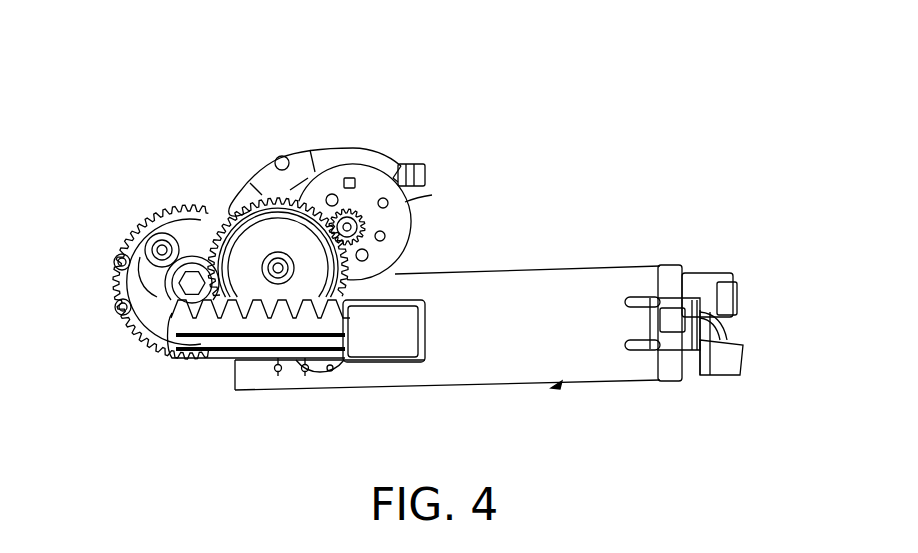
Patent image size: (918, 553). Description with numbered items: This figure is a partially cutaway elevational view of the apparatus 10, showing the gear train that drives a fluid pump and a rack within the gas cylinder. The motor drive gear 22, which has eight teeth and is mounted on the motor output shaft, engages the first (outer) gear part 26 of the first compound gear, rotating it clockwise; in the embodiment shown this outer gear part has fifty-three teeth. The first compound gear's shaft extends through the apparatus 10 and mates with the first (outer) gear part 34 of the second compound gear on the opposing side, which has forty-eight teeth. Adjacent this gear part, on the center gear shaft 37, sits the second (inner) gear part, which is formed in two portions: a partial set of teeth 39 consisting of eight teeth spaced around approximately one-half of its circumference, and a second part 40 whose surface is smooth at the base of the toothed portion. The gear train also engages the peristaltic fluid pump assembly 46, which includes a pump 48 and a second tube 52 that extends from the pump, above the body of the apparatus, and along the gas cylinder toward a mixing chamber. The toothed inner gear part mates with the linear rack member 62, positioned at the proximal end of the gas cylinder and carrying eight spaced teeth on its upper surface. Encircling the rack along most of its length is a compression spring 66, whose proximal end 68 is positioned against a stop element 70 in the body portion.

The apparatus 10 is at (612, 105).
The motor drive gear 22 is at (358, 224).
The first (outer) gear part 26 is at (283, 228).
The first (outer) gear part 34 is at (142, 222).
The center gear shaft 37 is at (190, 270).
The partial set of teeth 39 is at (193, 313).
The second part 40 is at (163, 307).
The peristaltic fluid pump assembly 46 is at (153, 282).
The pump 48 is at (365, 158).
The second tube 52 is at (258, 188).
The linear rack member 62 is at (253, 325).
The compression spring 66 is at (310, 372).
The proximal end 68 is at (284, 372).
The stop element 70 is at (277, 372).